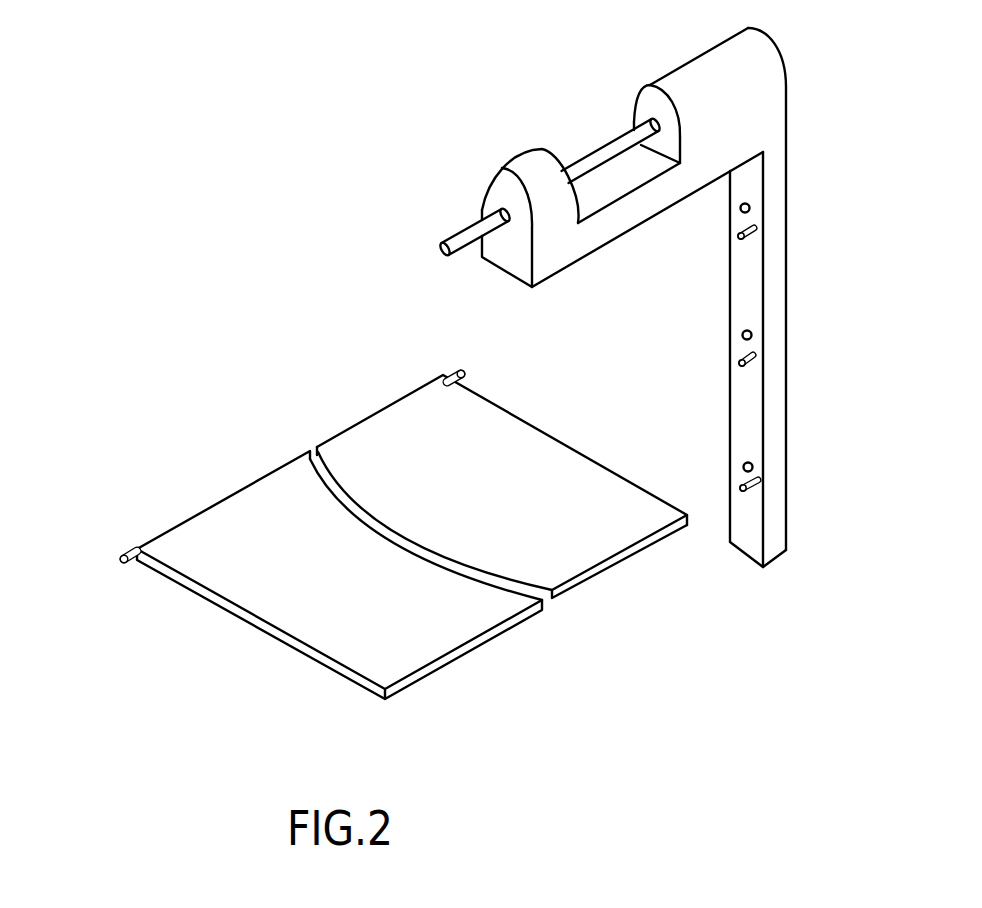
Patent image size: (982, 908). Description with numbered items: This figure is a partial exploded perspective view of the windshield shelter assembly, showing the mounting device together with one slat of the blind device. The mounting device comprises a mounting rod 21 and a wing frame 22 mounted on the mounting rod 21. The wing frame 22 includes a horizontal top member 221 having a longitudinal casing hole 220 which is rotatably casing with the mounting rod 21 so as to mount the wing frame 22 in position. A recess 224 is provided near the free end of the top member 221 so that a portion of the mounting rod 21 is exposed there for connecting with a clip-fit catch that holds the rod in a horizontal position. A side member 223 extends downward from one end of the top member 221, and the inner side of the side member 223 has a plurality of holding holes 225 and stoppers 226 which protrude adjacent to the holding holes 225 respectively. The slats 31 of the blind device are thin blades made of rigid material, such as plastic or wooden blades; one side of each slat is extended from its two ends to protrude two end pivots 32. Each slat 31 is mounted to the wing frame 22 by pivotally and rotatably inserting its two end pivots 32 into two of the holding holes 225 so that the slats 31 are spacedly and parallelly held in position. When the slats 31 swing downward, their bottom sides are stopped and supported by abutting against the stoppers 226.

The wing frame 22 is at (629, 293).
The mounting rod 21 is at (592, 160).
The longitudinal casing hole 220 is at (497, 187).
The horizontal top member 221 is at (537, 175).
The side member 223 is at (777, 288).
The recess 224 is at (647, 187).
The holding holes 225 is at (750, 204).
The stoppers 226 is at (756, 229).
The slats 31 is at (398, 618).
The end pivots 32 is at (128, 551).